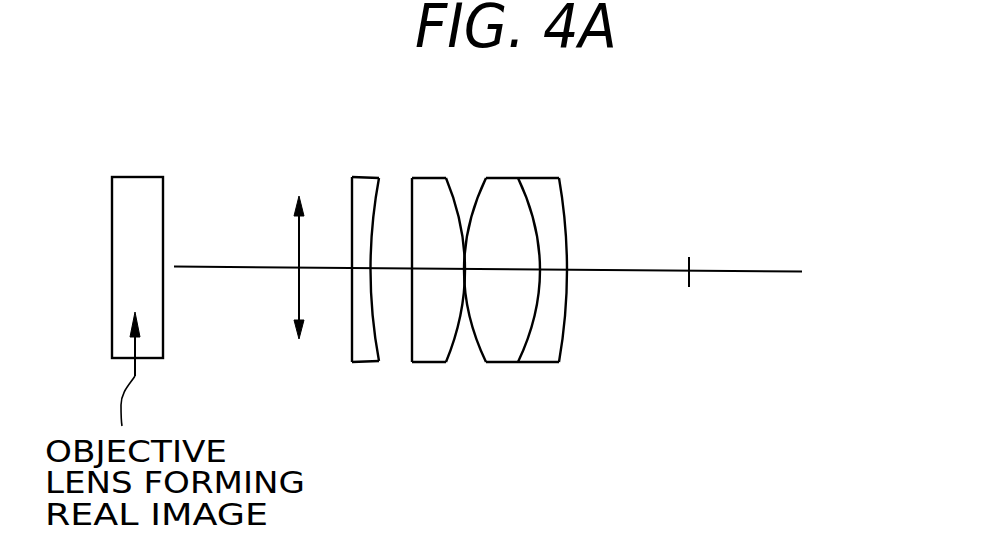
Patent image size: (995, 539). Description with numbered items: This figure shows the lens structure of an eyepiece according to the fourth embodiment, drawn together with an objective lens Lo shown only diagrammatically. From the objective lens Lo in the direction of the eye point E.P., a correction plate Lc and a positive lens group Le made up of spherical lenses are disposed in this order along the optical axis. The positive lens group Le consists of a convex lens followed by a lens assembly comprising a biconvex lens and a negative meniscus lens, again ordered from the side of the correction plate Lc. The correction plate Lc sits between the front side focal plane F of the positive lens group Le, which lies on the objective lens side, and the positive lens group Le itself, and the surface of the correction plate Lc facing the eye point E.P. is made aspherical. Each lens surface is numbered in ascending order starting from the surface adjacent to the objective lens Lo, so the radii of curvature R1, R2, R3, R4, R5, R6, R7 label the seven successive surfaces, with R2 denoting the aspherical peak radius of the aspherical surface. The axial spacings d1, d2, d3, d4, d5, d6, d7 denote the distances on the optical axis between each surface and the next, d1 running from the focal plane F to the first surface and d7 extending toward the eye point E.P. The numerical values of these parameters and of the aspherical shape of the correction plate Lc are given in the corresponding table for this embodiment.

The objective lens Lo is at (134, 197).
The correction plate Lc is at (336, 267).
The positive lens group Le is at (510, 267).
The front side focal plane F is at (296, 309).
The spacing d1 is at (362, 268).
The spacing d2 is at (392, 251).
The spacing d3 is at (438, 251).
The spacing d4 is at (464, 271).
The spacing d5 is at (502, 252).
The spacing d6 is at (553, 269).
The spacing d7 is at (628, 253).
The radius of curvature R1 is at (352, 353).
The radius of curvature R2 is at (375, 343).
The radius of curvature R3 is at (413, 353).
The radius of curvature R4 is at (447, 344).
The radius of curvature R5 is at (477, 340).
The radius of curvature R6 is at (526, 342).
The radius of curvature R7 is at (559, 346).
The eye point E.P. is at (693, 254).